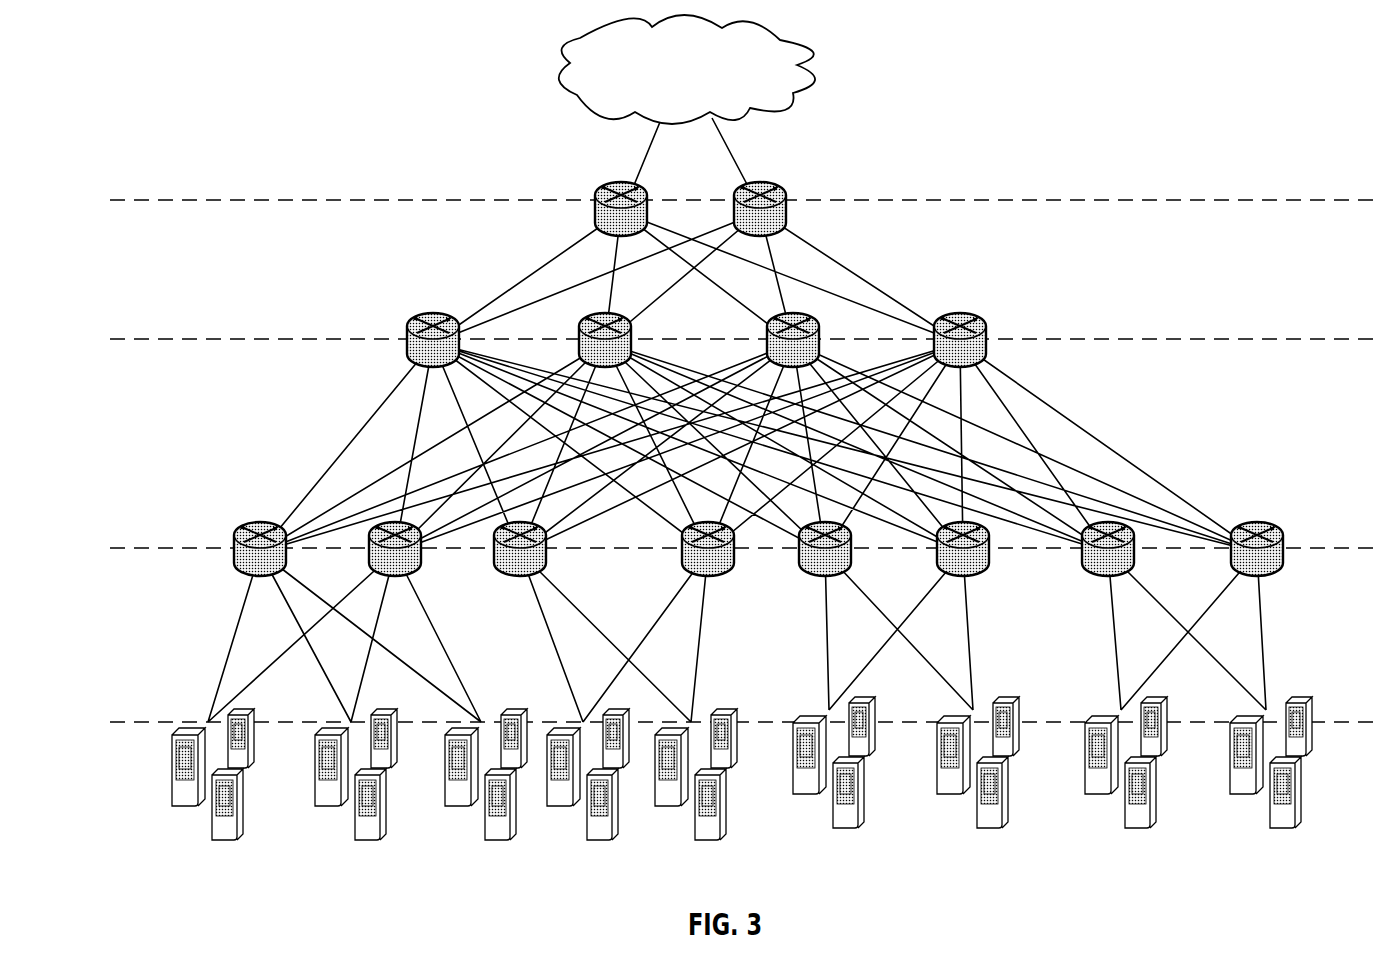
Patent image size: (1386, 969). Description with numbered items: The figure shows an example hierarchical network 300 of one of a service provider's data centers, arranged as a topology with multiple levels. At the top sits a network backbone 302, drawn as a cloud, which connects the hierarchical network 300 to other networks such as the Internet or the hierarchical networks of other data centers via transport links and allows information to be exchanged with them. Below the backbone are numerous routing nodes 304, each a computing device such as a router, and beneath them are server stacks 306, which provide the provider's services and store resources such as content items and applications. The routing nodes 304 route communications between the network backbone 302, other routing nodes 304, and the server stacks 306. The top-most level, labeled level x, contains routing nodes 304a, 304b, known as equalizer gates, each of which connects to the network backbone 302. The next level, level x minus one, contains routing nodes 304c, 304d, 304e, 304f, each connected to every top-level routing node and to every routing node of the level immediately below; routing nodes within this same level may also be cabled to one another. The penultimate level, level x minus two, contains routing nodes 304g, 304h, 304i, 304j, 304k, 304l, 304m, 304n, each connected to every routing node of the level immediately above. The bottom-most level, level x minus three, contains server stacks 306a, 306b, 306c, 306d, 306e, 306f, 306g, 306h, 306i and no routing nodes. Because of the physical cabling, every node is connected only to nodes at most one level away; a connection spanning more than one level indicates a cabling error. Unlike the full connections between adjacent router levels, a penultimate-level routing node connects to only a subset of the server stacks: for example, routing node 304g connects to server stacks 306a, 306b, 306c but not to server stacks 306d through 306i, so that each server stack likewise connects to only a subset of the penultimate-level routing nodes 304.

The hierarchical network 300 is at (383, 80).
The network backbone 302 is at (687, 69).
The routing nodes 304 is at (1302, 165).
The routing node 304a is at (599, 203).
The routing node 304b is at (782, 203).
The routing node 304c is at (414, 330).
The routing node 304d is at (582, 338).
The routing node 304e is at (815, 339).
The routing node 304f is at (982, 339).
The routing node 304g is at (239, 549).
The routing node 304h is at (374, 549).
The routing node 304i is at (501, 551).
The routing node 304j is at (688, 551).
The routing node 304k is at (804, 551).
The routing node 304l is at (944, 551).
The routing node 304m is at (1085, 551).
The routing node 304n is at (1235, 549).
The server stacks 306 is at (1302, 693).
The server stack 306a is at (213, 790).
The server stack 306b is at (356, 790).
The server stack 306c is at (486, 790).
The server stack 306d is at (588, 790).
The server stack 306e is at (696, 790).
The server stack 306f is at (834, 780).
The server stack 306g is at (978, 780).
The server stack 306h is at (1126, 780).
The server stack 306i is at (1271, 780).